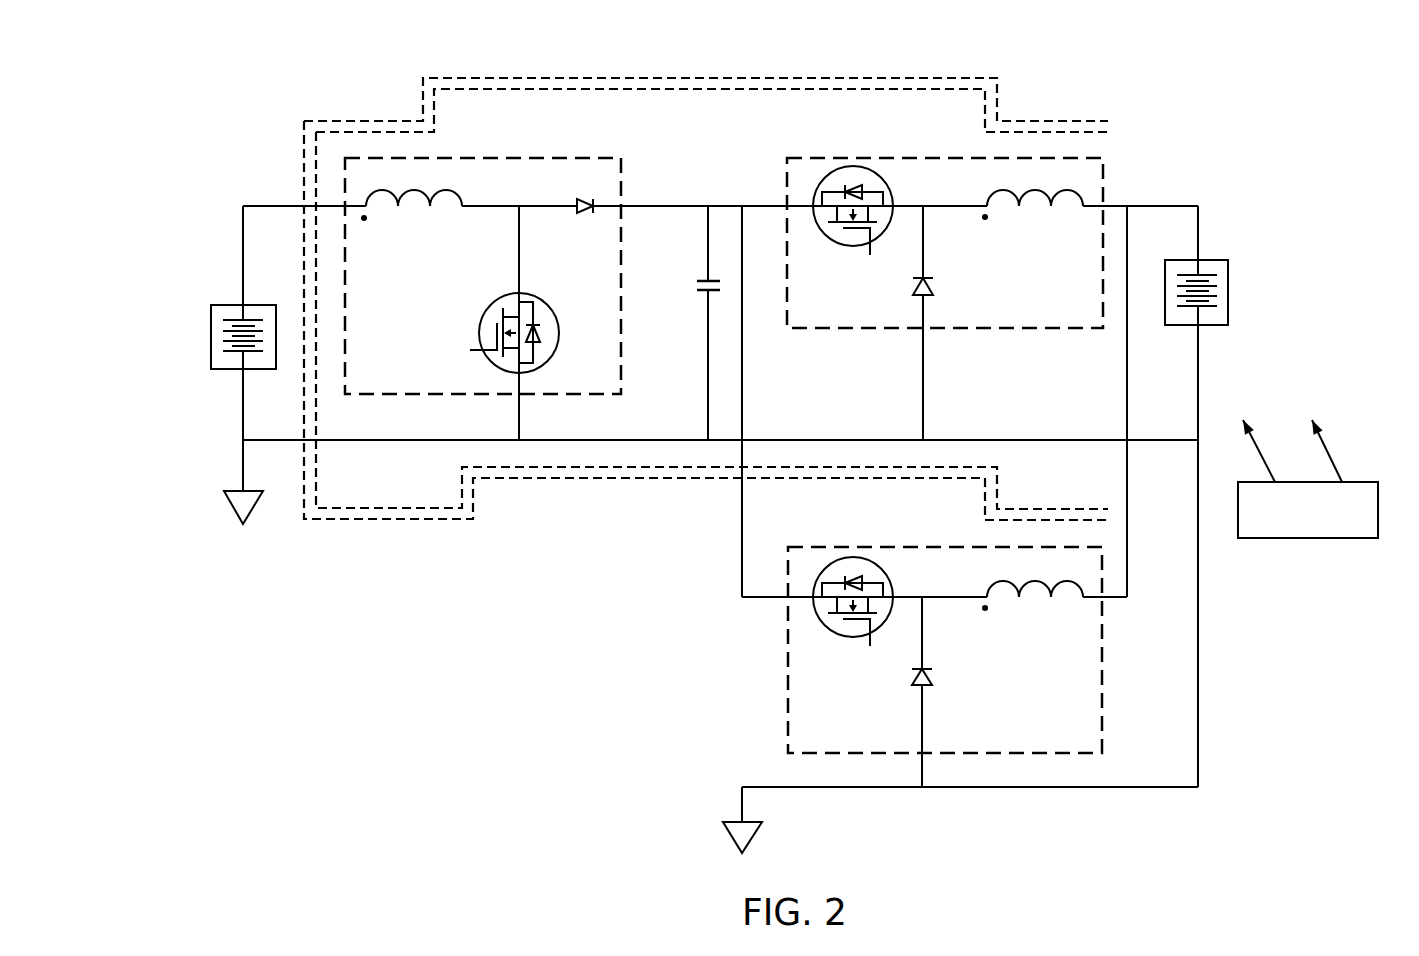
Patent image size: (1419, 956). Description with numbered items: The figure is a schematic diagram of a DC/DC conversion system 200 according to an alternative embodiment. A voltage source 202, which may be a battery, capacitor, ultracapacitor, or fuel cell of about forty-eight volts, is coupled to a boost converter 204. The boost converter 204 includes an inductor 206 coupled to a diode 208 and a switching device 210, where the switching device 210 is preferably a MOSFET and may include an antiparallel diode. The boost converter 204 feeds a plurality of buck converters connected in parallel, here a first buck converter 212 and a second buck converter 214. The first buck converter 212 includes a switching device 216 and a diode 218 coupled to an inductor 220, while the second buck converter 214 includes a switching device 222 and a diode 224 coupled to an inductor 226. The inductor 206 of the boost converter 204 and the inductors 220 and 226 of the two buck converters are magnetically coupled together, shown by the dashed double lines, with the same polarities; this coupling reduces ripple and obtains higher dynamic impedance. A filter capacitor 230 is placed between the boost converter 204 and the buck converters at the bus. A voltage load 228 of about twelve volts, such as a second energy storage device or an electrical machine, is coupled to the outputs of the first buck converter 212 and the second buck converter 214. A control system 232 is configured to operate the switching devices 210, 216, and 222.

The DC/DC conversion system 200 is at (1267, 95).
The voltage source 202 is at (222, 303).
The boost converter 204 is at (623, 372).
The inductor 206 is at (443, 192).
The diode 208 is at (583, 217).
The switching device 210 is at (483, 300).
The first buck converter 212 is at (1005, 330).
The second buck converter 214 is at (787, 657).
The switching device 216 is at (832, 245).
The diode 218 is at (935, 285).
The inductor 220 is at (1033, 188).
The switching device 222 is at (830, 637).
The diode 224 is at (933, 677).
The inductor 226 is at (1030, 572).
The voltage load 228 is at (1218, 260).
The filter capacitor 230 is at (700, 282).
The control system 232 is at (1305, 538).